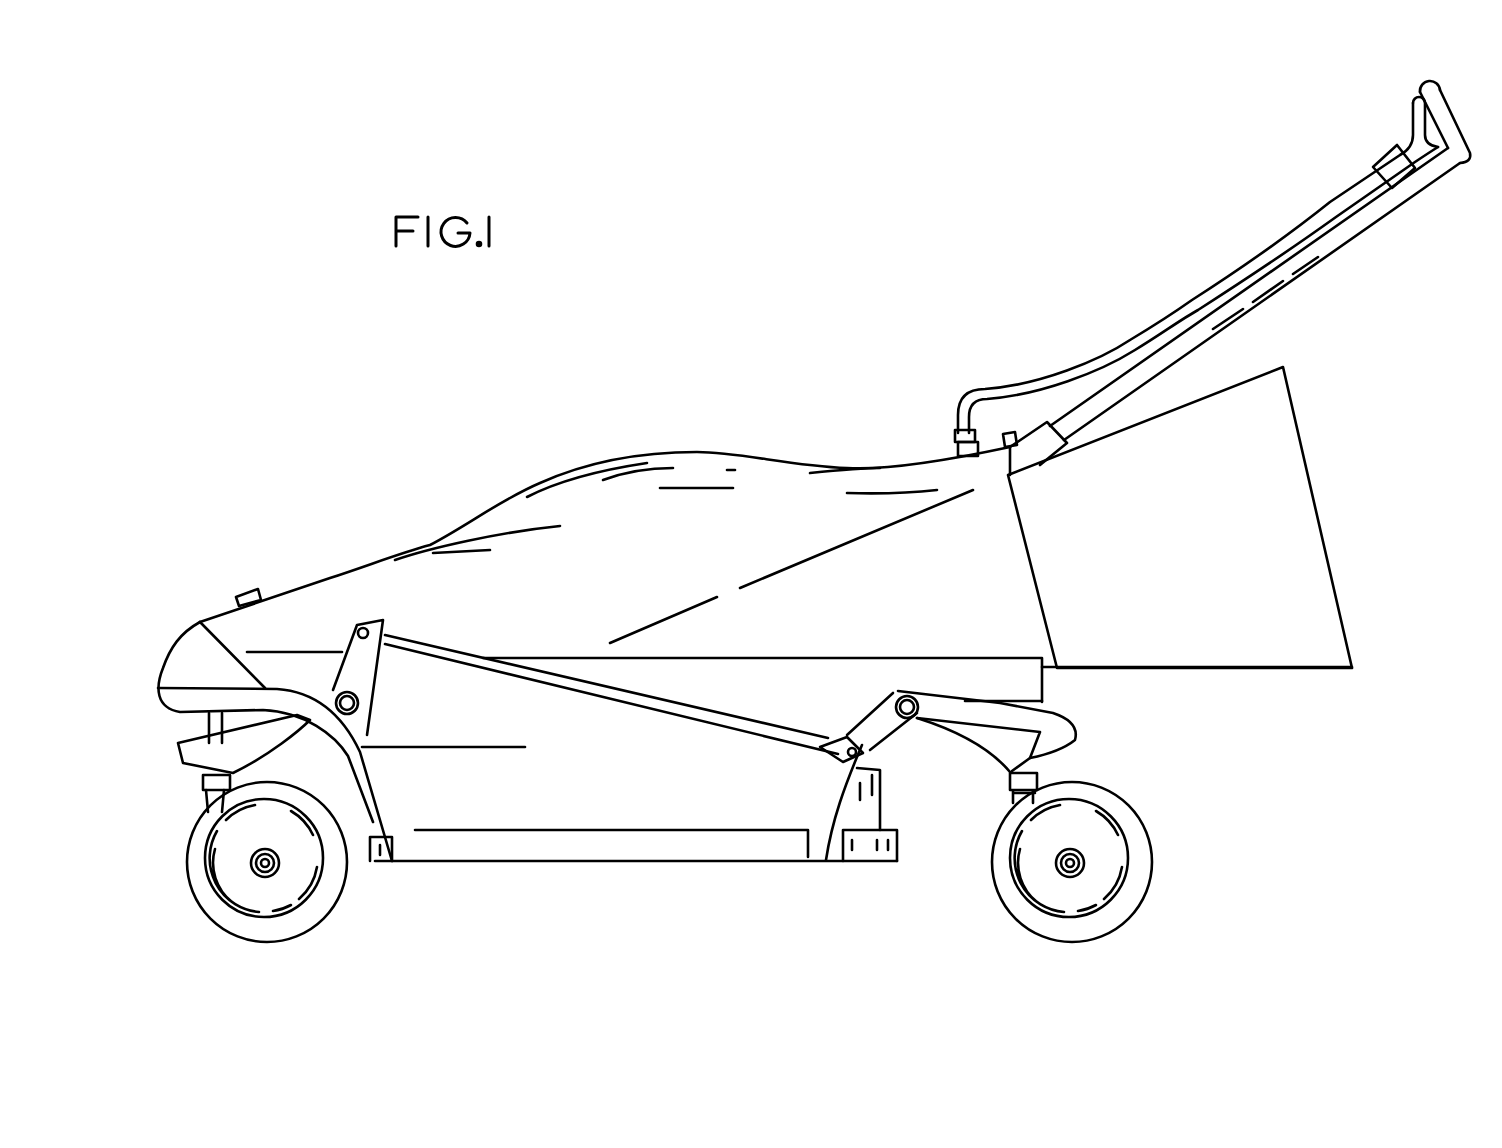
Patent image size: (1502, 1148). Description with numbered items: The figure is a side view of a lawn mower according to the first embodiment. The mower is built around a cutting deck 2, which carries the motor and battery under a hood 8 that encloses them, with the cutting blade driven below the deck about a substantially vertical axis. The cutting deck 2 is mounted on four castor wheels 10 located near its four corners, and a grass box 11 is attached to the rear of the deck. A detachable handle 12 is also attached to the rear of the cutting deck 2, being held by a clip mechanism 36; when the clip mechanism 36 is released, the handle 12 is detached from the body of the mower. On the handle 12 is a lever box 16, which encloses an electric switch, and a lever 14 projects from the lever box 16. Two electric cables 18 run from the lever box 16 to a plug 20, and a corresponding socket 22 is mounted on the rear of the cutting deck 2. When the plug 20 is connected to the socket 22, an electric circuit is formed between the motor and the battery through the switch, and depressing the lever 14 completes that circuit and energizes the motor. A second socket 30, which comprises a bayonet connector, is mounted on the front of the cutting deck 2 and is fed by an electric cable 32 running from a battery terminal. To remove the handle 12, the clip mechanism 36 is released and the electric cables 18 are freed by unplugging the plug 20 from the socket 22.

The cutting deck 2 is at (743, 848).
The hood 8 is at (588, 495).
The castor wheels 10 is at (293, 890).
The grass box 11 is at (1192, 599).
The detachable handle 12 is at (1327, 255).
The lever 14 is at (1412, 118).
The lever box 16 is at (1387, 163).
The electric cables 18 is at (1190, 306).
The plug 20 is at (957, 436).
The socket 22 is at (958, 455).
The second socket 30 is at (250, 590).
The electric cable 32 is at (1030, 707).
The clip mechanism 36 is at (1018, 418).